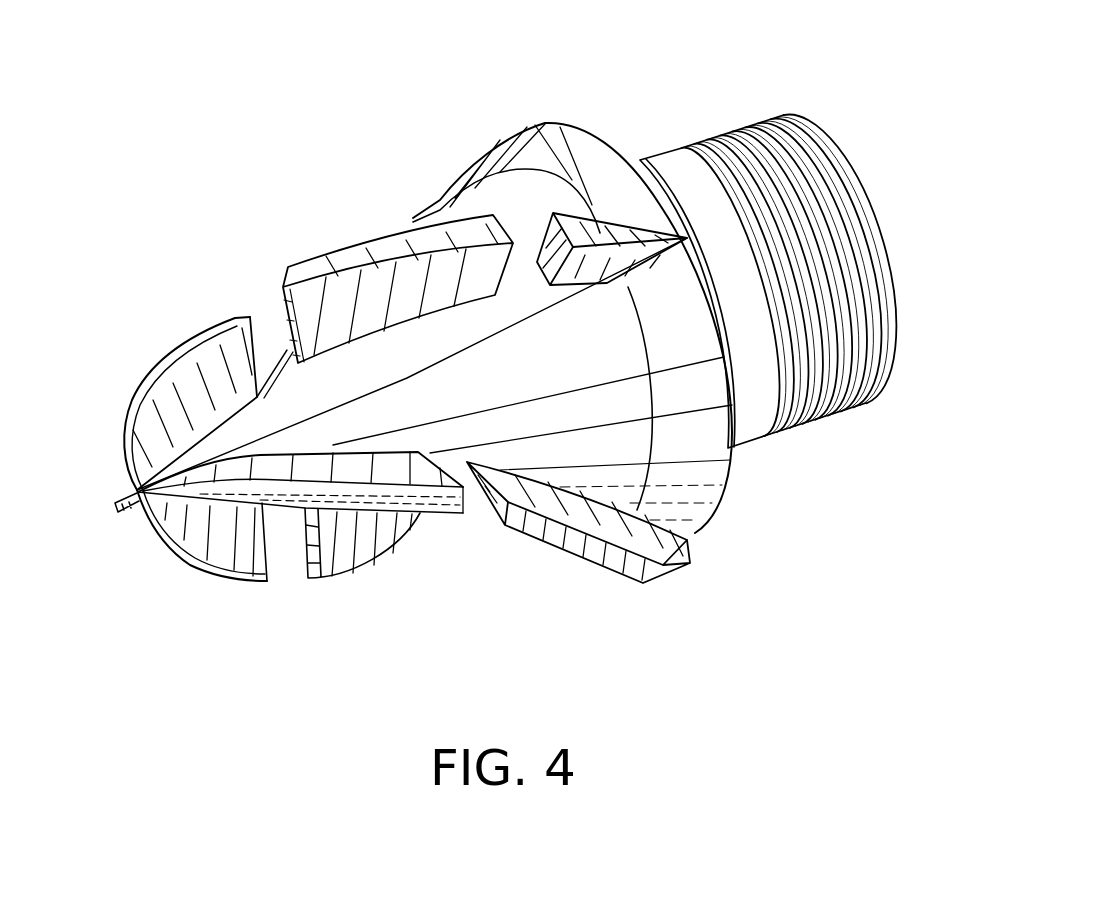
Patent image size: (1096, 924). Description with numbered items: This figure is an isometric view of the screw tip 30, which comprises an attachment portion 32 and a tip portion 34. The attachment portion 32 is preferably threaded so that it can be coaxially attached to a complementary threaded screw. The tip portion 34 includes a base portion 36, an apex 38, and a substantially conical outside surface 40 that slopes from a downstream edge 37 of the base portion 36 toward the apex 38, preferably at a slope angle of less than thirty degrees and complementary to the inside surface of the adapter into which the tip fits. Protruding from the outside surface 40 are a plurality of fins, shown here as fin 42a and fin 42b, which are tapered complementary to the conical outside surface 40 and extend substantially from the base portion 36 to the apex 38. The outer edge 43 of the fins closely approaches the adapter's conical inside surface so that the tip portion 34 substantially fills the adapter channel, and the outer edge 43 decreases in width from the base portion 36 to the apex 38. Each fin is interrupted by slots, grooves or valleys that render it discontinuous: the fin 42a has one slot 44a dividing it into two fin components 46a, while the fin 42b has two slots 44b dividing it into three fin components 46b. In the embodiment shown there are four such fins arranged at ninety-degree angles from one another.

The screw tip 30 is at (306, 77).
The attachment portion 32 is at (702, 138).
The tip portion 34 is at (410, 195).
The base portion 36 is at (678, 463).
The downstream edge 37 is at (593, 448).
The apex 38 is at (138, 492).
The outside surface 40 is at (325, 396).
The fin 42a is at (632, 598).
The fin 42b is at (140, 366).
The outer edge 43 is at (556, 535).
The slot 44a is at (477, 507).
The slot 44b is at (277, 360).
The fin component 46a is at (397, 483).
The fin component 46b is at (200, 377).